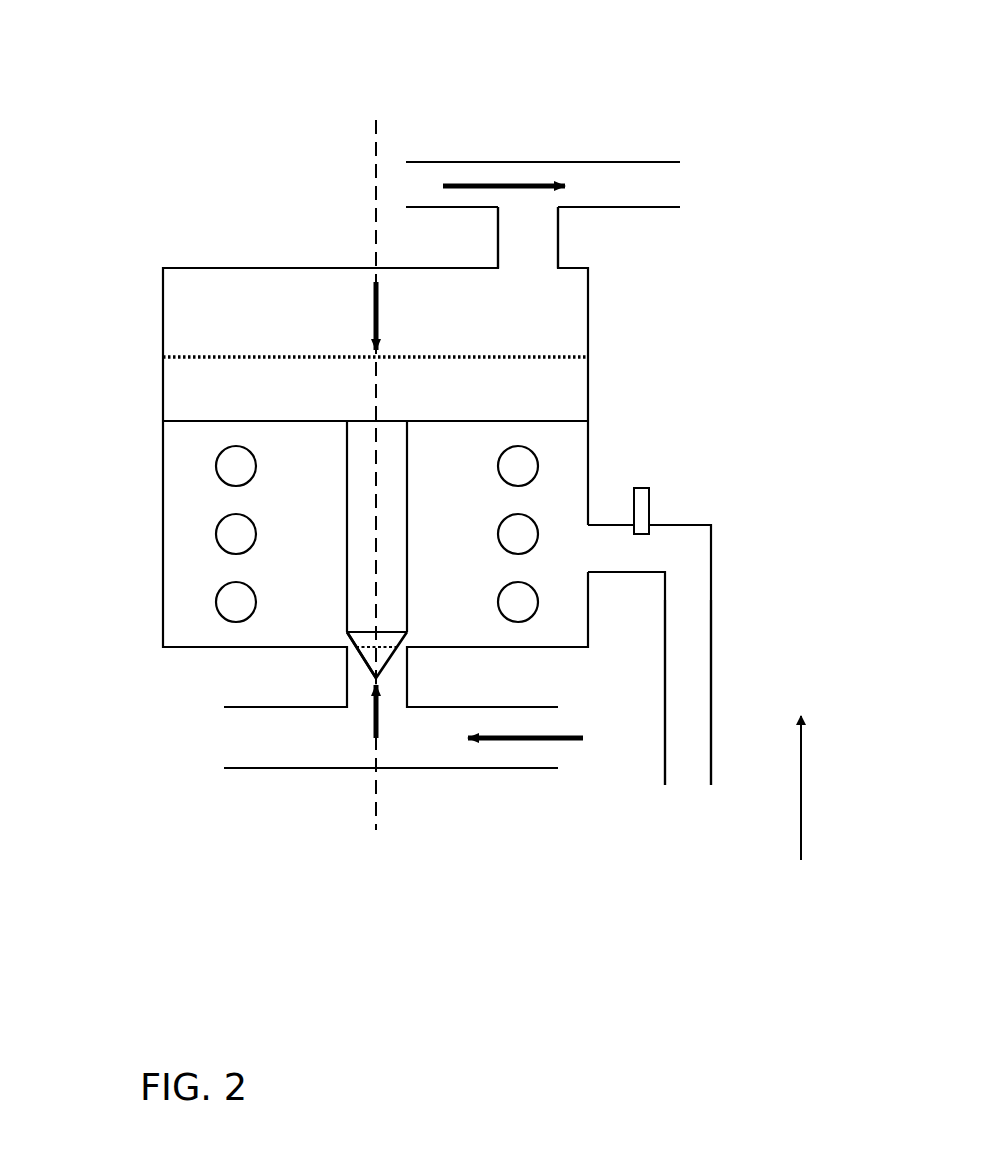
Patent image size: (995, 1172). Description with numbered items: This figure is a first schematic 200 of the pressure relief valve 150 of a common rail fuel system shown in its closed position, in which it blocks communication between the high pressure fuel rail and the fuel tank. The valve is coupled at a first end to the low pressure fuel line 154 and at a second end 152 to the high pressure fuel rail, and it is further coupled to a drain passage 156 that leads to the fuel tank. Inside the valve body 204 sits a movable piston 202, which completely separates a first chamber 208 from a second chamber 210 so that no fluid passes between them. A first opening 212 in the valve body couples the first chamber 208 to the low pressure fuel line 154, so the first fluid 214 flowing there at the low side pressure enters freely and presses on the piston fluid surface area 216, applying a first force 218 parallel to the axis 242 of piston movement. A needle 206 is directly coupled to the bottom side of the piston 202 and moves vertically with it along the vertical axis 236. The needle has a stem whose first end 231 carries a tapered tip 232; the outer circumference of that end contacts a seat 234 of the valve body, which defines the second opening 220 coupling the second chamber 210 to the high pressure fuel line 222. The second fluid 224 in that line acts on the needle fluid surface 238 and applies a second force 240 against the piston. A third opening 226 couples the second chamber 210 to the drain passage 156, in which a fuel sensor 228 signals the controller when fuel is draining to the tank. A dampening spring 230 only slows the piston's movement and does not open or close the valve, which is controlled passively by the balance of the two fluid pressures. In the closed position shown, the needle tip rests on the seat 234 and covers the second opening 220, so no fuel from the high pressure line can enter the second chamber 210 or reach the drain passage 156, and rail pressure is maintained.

The first schematic 200 is at (650, 78).
The pressure relief valve 150 is at (122, 274).
The second end 152 is at (107, 741).
The low pressure fuel line 154 is at (648, 162).
The drain passage 156 is at (711, 647).
The piston 202 is at (195, 390).
The valve body 204 is at (162, 563).
The needle 206 is at (380, 517).
The first chamber 208 is at (240, 314).
The second chamber 210 is at (567, 450).
The first opening 212 is at (528, 268).
The first fluid 214 is at (513, 185).
The piston fluid surface area 216 is at (547, 349).
The first force 218 is at (373, 302).
The second opening 220 is at (378, 657).
The high pressure fuel line 222 is at (285, 768).
The second fluid 224 is at (512, 740).
The third opening 226 is at (588, 549).
The fuel sensor 228 is at (641, 488).
The dampening spring 230 is at (215, 537).
The first end of the stem 231 is at (392, 640).
The tapered tip 232 is at (380, 660).
The seat 234 is at (357, 657).
The vertical axis 236 is at (800, 807).
The needle fluid surface 238 is at (398, 684).
The second force 240 is at (380, 725).
The axis 242 is at (375, 148).